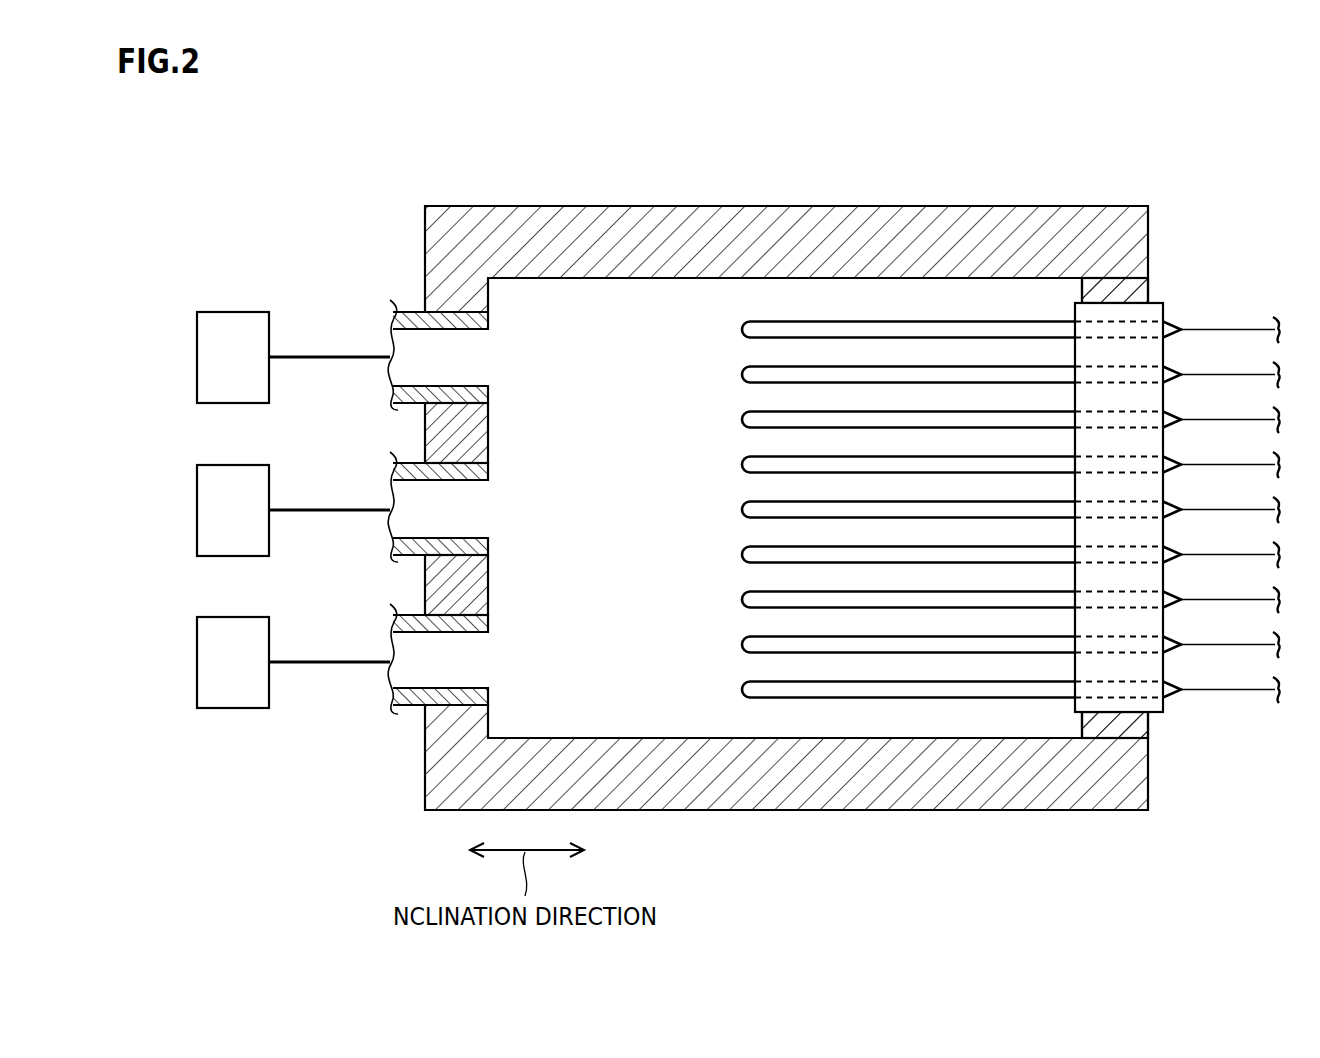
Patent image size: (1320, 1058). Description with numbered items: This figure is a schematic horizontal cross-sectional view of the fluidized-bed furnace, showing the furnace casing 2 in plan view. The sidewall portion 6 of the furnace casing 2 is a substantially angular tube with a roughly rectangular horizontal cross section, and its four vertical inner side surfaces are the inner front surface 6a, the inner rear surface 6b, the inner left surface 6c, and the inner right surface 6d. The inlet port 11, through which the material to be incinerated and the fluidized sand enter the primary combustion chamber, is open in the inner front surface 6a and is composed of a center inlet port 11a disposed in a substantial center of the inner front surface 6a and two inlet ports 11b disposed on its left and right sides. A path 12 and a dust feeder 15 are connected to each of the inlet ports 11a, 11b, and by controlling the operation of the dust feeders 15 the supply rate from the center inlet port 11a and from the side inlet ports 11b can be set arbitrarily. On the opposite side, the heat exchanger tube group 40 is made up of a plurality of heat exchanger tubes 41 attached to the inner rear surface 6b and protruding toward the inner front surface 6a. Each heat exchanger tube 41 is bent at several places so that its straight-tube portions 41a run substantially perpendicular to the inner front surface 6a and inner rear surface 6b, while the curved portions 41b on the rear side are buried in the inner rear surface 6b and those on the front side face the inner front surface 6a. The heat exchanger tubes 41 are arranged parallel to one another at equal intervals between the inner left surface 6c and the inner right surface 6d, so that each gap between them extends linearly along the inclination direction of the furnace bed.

The furnace casing 2 is at (551, 148).
The sidewall portion 6 is at (626, 203).
The inner front surface 6a is at (487, 424).
The inner rear surface 6b is at (1088, 272).
The inner left surface 6c is at (685, 279).
The inner right surface 6d is at (662, 738).
The inlet port 11 is at (525, 507).
The center inlet port 11a is at (455, 482).
The inlet port 11b is at (452, 384).
The path 12 is at (328, 355).
The dust feeder 15 is at (206, 356).
The heat exchanger tube group 40 is at (922, 421).
The heat exchanger tube 41 is at (738, 419).
The straight-tube portion 41a is at (852, 414).
The curved portion 41b is at (743, 510).